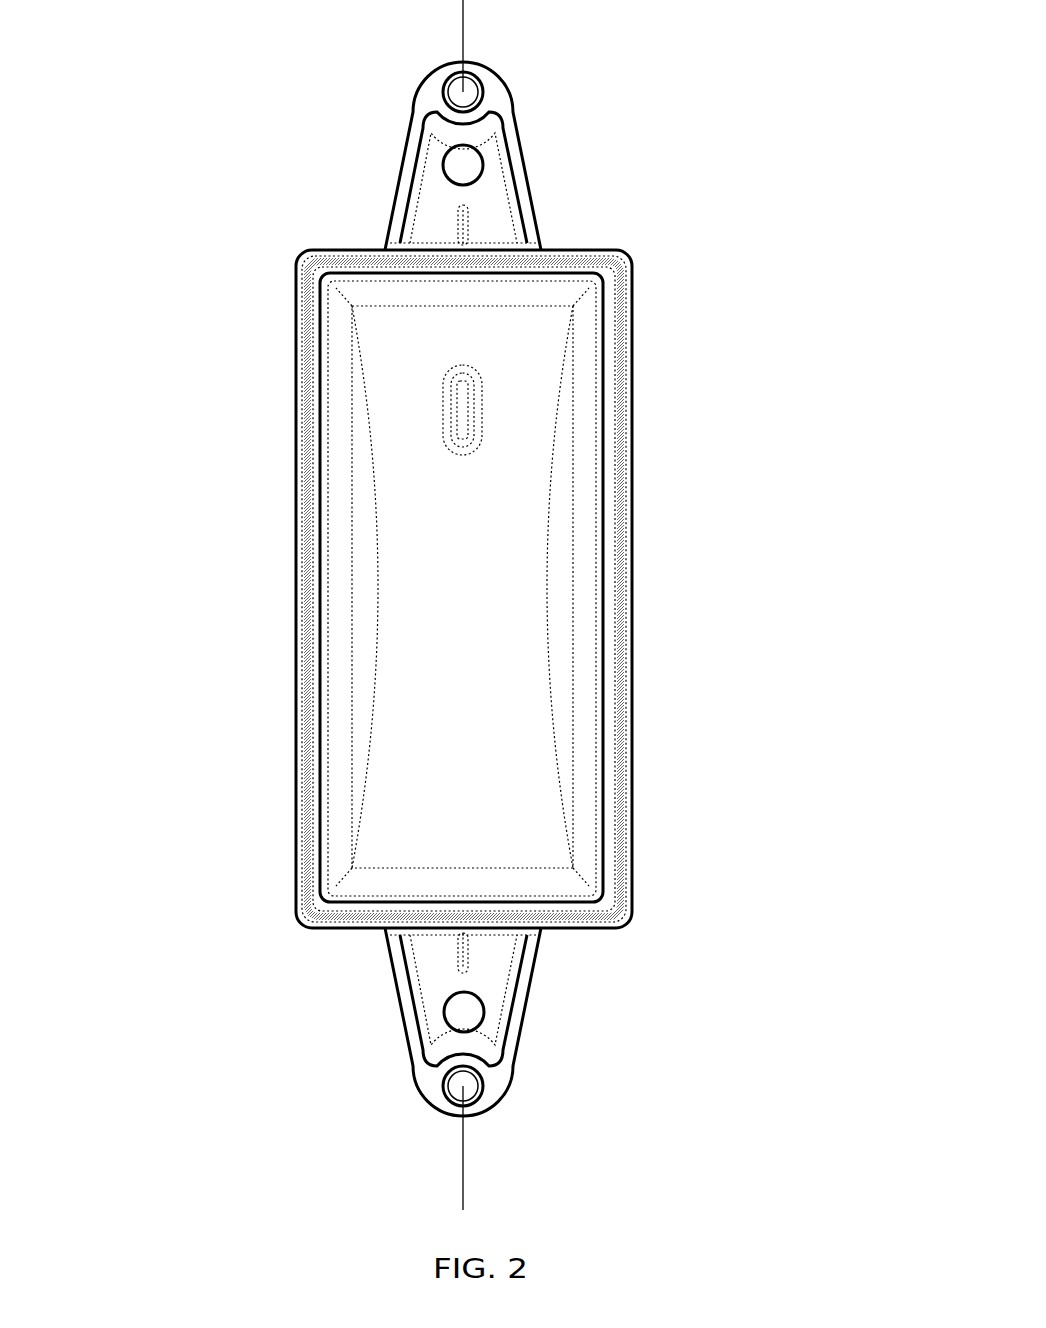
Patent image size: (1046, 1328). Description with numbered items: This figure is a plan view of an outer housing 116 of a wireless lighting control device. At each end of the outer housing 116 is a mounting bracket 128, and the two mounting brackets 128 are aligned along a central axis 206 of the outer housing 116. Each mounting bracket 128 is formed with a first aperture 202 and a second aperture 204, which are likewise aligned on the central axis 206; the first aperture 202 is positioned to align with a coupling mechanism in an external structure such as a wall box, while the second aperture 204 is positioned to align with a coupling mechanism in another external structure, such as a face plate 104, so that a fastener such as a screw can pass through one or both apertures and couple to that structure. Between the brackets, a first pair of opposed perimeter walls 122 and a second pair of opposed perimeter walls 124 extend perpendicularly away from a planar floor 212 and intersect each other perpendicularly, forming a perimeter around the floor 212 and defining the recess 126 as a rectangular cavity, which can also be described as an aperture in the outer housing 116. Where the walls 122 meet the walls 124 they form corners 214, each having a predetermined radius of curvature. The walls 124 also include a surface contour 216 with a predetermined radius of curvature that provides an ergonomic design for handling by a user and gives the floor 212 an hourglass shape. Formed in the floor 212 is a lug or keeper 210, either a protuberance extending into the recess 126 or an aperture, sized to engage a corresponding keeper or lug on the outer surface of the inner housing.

The outer housing 116 is at (293, 72).
The face plate 104 is at (520, 1040).
The first pair of opposed perimeter walls 122 is at (562, 248).
The second pair of opposed perimeter walls 124 is at (622, 345).
The recess 126 is at (417, 635).
The mounting brackets 128 is at (520, 103).
The first aperture 202 is at (455, 70).
The second aperture 204 is at (462, 165).
The central axis 206 is at (458, 1140).
The lug or keeper 210 is at (445, 410).
The floor 212 is at (481, 710).
The corners 214 is at (350, 303).
The surface contour 216 is at (375, 568).